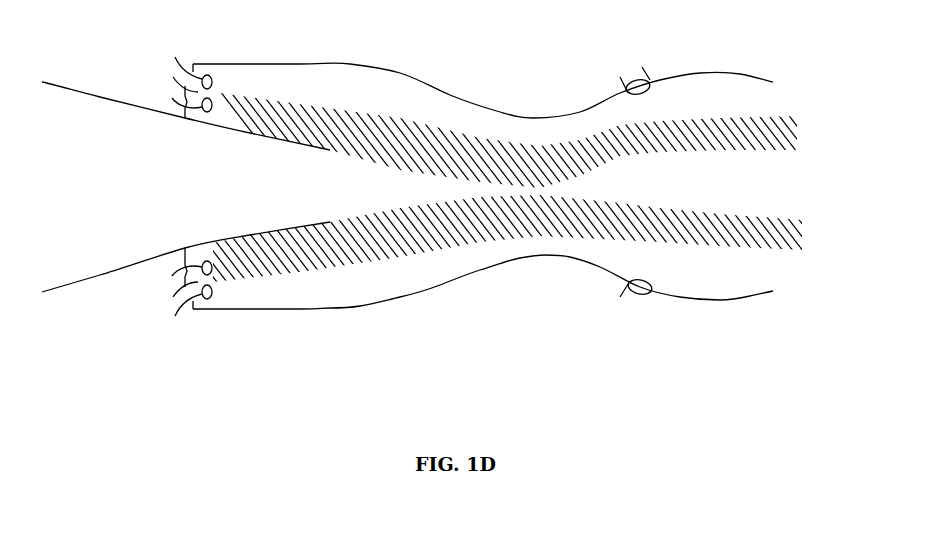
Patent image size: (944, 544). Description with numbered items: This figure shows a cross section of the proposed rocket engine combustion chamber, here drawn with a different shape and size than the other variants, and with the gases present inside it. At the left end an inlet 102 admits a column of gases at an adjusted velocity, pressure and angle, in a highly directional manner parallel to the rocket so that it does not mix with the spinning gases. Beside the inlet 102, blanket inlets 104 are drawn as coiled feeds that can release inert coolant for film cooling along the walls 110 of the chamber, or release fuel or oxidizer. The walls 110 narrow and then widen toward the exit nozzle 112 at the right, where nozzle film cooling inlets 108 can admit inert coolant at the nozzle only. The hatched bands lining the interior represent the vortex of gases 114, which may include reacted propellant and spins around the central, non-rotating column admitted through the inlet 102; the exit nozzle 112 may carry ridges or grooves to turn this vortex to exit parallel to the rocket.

The inlet 102 is at (152, 194).
The blanket inlet 104 is at (177, 312).
The nozzle film cooling inlet 108 is at (647, 295).
The wall 110 is at (303, 308).
The exit nozzle 112 is at (737, 300).
The vortex of gases 114 is at (770, 118).